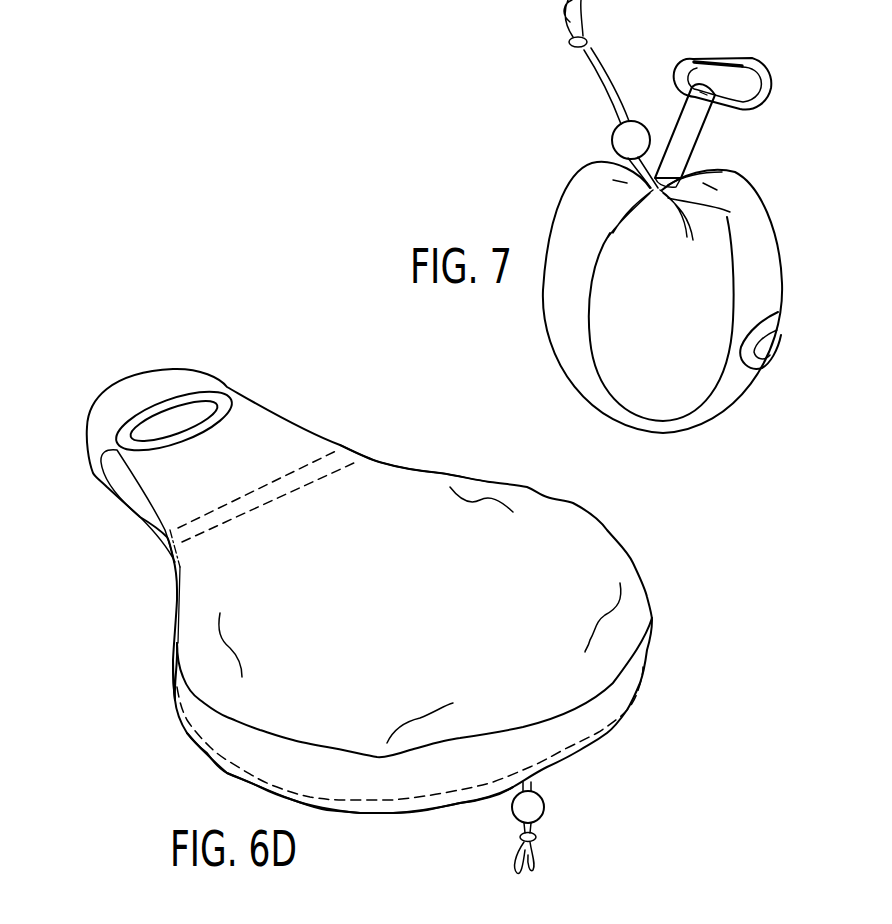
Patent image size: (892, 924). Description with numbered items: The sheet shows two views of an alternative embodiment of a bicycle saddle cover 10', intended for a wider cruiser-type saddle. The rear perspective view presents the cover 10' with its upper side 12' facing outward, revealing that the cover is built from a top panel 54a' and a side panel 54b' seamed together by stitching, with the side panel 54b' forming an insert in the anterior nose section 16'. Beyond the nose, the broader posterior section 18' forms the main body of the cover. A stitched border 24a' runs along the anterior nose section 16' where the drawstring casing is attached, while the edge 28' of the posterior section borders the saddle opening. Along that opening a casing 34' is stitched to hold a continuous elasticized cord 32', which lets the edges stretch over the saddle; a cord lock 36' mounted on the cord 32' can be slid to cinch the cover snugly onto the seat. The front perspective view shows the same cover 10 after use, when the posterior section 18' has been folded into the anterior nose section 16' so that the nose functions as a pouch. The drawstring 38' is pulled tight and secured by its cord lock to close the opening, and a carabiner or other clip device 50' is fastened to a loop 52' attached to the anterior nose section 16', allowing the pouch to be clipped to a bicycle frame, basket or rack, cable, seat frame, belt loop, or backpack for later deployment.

In FIG. 7, the cover 10 is at (678, 226).
In FIG. 6D, the cover 10' is at (383, 623).
In FIG. 6D, the upper side 12' is at (369, 591).
In FIG. 6D, the anterior nose section 16' is at (195, 413).
In FIG. 7, the anterior nose section 16' is at (776, 333).
In FIG. 6D, the posterior section 18' is at (415, 455).
In FIG. 6D, the border of the anterior nose section 24a' is at (263, 517).
In FIG. 6D, the edge of the posterior section 28' is at (343, 750).
In FIG. 6D, the elasticized cord 32' is at (554, 862).
In FIG. 6D, the casing 34' is at (422, 733).
In FIG. 6D, the cord lock 36' is at (552, 812).
In FIG. 7, the drawstring 38' is at (603, 62).
In FIG. 7, the clip device 50' is at (736, 60).
In FIG. 7, the loop 52' is at (707, 135).
In FIG. 6D, the top panel 54a' is at (380, 662).
In FIG. 7, the top panel 54a' is at (740, 435).
In FIG. 6D, the side panel 54b' is at (383, 551).
In FIG. 7, the side panel 54b' is at (752, 401).